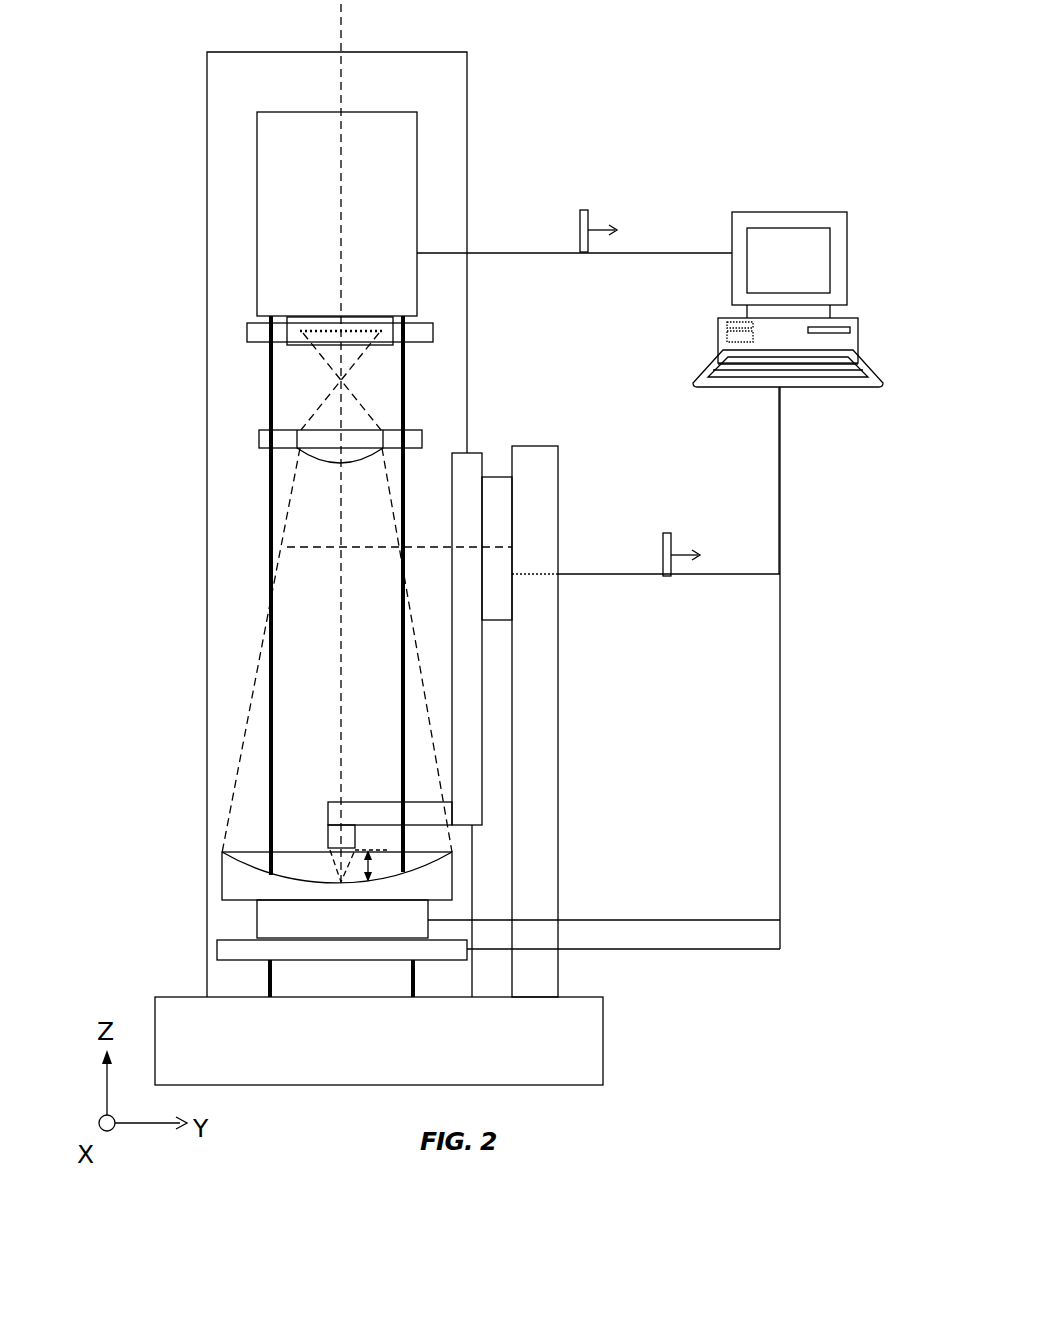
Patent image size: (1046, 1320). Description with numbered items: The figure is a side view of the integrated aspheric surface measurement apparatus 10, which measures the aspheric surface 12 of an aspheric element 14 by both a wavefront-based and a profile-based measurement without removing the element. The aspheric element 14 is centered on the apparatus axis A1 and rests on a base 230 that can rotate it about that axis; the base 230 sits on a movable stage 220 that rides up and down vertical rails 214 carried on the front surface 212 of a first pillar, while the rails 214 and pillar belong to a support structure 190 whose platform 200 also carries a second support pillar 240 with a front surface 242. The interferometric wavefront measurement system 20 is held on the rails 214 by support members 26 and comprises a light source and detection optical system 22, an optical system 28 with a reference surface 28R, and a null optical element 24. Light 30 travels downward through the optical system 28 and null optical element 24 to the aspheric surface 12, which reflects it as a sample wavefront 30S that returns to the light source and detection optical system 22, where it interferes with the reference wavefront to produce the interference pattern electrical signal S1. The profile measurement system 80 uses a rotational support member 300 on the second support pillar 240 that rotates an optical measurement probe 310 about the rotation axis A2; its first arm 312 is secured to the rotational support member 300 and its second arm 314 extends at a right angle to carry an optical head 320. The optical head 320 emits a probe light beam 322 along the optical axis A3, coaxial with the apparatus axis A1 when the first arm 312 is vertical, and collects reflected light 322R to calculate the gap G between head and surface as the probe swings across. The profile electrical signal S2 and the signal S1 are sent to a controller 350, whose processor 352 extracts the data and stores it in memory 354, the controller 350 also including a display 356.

The aspheric surface measurement apparatus 10 is at (636, 70).
The aspheric surface 12 is at (337, 870).
The aspheric element 14 is at (274, 857).
The interferometric wavefront measurement system 20 is at (296, 297).
The light source and detection optical system 22 is at (257, 193).
The null optical element 24 is at (322, 461).
The support members 26 is at (247, 332).
The optical system 28 is at (250, 344).
The reference surface 28R is at (293, 343).
The light 30 is at (267, 593).
The sample wavefront 30S is at (260, 642).
The profile measurement system 80 is at (176, 672).
The support structure 190 is at (598, 721).
The platform 200 is at (603, 1035).
The front surface 212 is at (450, 187).
The vertical rails 214 is at (270, 501).
The movable stage 220 is at (217, 950).
The base 230 is at (257, 918).
The second support pillar 240 is at (543, 610).
The front surface 242 is at (498, 514).
The rotational support member 300 is at (333, 631).
The optical measurement probe 310 is at (443, 518).
The first arm 312 is at (468, 675).
The second arm 314 is at (360, 802).
The optical head 320 is at (330, 840).
The probe light beam 322 is at (191, 790).
The reflected light 322R is at (330, 838).
The controller 350 is at (760, 357).
The processor unit 352 is at (727, 327).
The memory unit 354 is at (727, 338).
The display 356 is at (732, 233).
The apparatus axis A1 is at (340, 24).
The rotation axis A2 is at (300, 548).
The optical axis A3 is at (335, 858).
The interference pattern electrical signal S1 is at (583, 210).
The profile electrical signal S2 is at (667, 533).
The gap G is at (377, 866).